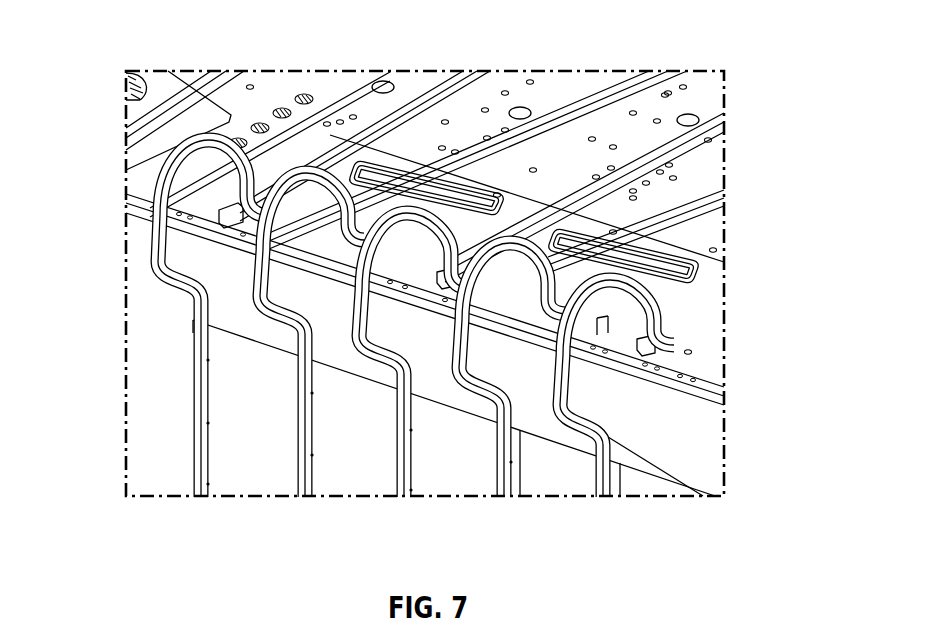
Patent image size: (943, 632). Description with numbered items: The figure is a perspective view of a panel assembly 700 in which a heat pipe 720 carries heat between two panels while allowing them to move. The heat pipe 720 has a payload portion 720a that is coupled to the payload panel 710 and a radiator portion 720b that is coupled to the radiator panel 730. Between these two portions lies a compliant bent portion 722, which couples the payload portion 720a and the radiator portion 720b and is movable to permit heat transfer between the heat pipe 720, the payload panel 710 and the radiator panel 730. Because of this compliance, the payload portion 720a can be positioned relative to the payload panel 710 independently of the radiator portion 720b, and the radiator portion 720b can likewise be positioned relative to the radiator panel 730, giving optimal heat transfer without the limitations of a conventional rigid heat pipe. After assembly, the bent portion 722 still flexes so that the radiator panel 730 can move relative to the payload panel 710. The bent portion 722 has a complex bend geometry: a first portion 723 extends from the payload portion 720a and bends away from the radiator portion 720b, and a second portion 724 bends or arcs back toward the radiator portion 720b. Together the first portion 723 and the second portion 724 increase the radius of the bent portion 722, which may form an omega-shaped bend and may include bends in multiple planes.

The panel assembly 700 is at (140, 55).
The payload panel 710 is at (663, 108).
The heat pipe 720 is at (707, 200).
The payload portion 720a is at (718, 118).
The radiator portion 720b is at (508, 478).
The bent portion 722 is at (567, 367).
The first portion 723 is at (703, 292).
The second portion 724 is at (632, 456).
The radiator panel 730 is at (355, 468).